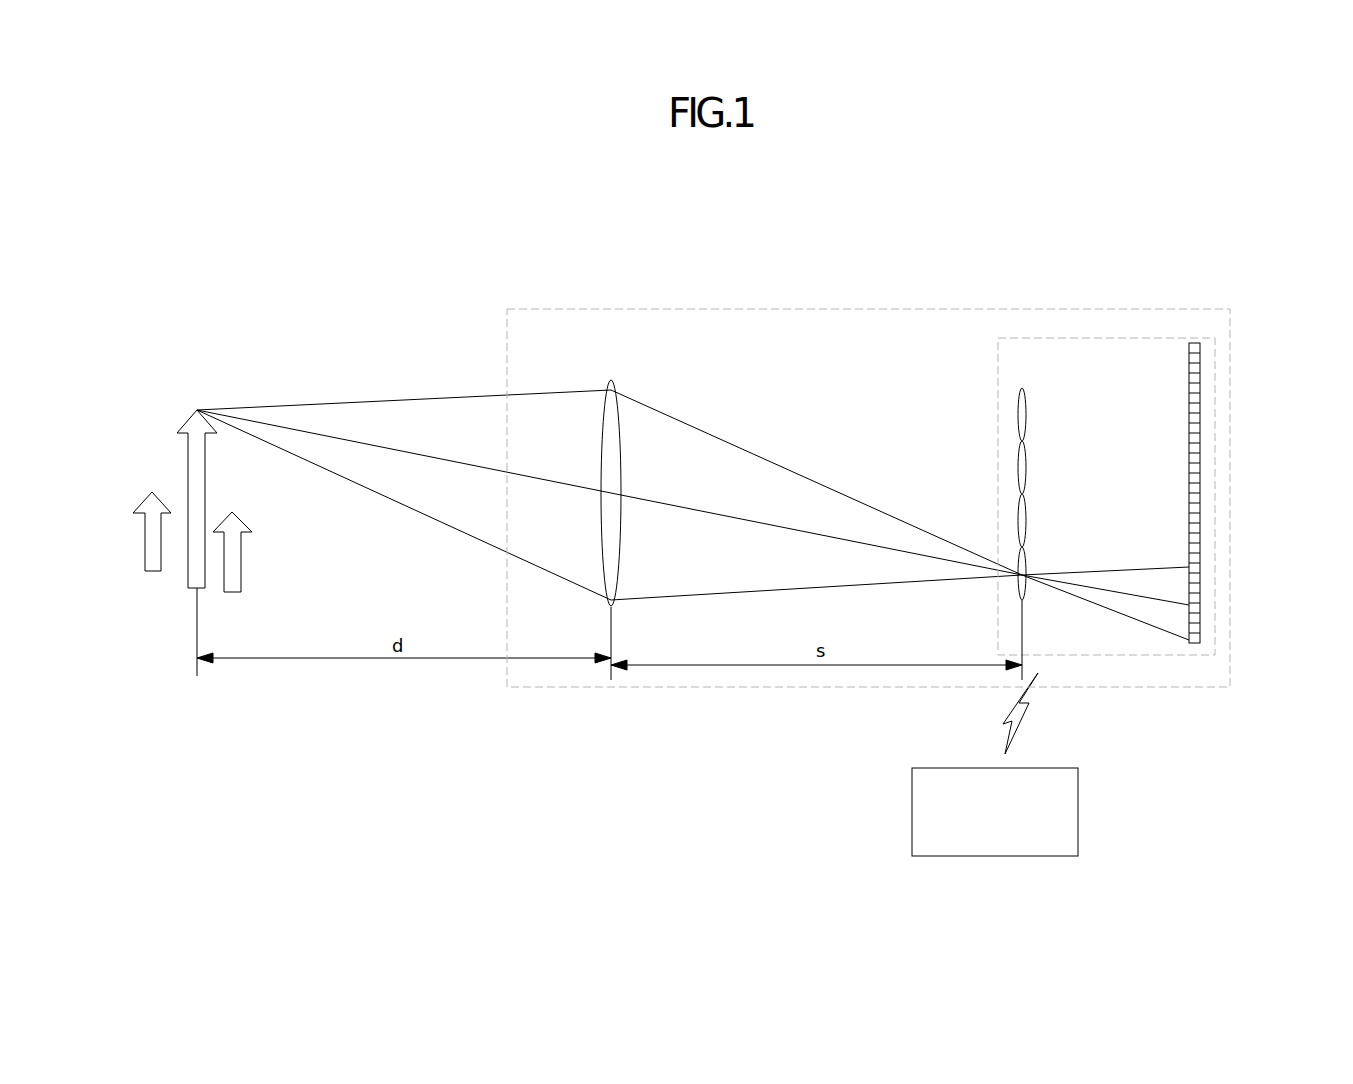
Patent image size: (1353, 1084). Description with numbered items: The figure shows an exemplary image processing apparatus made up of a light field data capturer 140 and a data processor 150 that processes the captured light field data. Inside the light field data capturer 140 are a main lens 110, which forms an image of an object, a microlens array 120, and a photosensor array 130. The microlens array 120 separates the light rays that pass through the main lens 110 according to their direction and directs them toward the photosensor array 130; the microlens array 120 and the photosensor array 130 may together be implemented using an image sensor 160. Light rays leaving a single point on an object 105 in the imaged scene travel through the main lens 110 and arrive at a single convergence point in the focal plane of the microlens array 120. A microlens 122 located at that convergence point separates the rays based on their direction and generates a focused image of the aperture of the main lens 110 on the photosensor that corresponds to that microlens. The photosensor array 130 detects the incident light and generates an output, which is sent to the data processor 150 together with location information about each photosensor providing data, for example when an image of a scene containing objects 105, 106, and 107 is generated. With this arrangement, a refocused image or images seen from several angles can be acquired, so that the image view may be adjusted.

The object 105 is at (197, 400).
The object 106 is at (141, 485).
The object 107 is at (240, 503).
The main lens 110 is at (625, 362).
The microlens array 120 is at (1084, 534).
The microlens 122 is at (1027, 561).
The photosensor array 130 is at (1189, 446).
The light field data capturer 140 is at (1094, 308).
The data processor 150 is at (1078, 856).
The image sensor 160 is at (1217, 366).